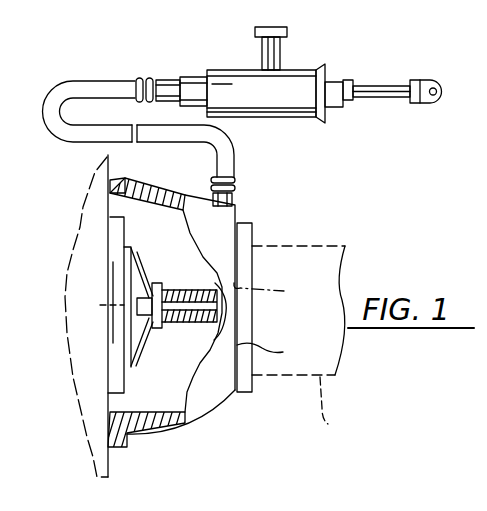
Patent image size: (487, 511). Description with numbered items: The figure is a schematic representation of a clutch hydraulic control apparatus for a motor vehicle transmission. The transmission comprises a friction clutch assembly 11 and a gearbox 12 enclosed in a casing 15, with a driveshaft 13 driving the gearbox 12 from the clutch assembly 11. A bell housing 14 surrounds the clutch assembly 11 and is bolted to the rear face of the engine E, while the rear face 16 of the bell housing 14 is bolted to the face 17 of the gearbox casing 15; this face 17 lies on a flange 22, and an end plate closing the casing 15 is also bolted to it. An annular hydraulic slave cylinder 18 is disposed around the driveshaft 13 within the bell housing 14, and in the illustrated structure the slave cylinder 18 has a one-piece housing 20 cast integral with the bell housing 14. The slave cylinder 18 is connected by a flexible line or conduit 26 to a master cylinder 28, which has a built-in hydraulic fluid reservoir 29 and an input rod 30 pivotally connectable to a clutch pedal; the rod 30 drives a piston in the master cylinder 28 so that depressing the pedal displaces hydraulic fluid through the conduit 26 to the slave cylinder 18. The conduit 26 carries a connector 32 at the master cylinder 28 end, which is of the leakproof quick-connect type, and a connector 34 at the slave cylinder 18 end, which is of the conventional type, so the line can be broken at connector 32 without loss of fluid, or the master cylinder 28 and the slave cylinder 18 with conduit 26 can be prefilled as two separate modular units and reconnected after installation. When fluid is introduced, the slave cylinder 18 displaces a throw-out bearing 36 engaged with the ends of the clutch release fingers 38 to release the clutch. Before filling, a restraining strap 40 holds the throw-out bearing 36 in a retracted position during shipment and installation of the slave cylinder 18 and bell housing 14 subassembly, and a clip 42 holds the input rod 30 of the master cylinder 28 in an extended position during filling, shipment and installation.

The engine E is at (113, 470).
The clutch assembly 11 is at (127, 231).
The gearbox 12 is at (331, 243).
The driveshaft 13 is at (102, 286).
The bell housing 14 is at (187, 195).
The gearbox casing 15 is at (336, 409).
The rear face of the bell housing 16 is at (273, 353).
The face of the gearbox casing 17 is at (273, 296).
The slave cylinder 18 is at (177, 330).
The slave cylinder housing 20 is at (197, 334).
The flange 22 is at (243, 394).
The line or conduit 26 is at (88, 78).
The master cylinder 28 is at (317, 120).
The hydraulic fluid reservoir 29 is at (286, 36).
The input rod 30 is at (397, 97).
The connector 32 is at (170, 77).
The connector 34 is at (237, 202).
The throw-out bearing 36 is at (148, 290).
The clutch release fingers 38 is at (140, 342).
The restraining strap 40 is at (188, 300).
The clip 42 is at (355, 86).